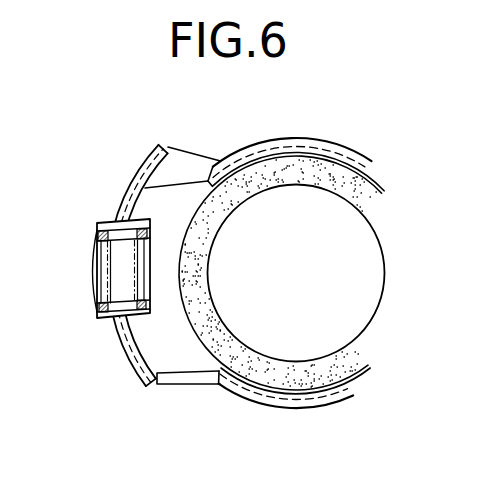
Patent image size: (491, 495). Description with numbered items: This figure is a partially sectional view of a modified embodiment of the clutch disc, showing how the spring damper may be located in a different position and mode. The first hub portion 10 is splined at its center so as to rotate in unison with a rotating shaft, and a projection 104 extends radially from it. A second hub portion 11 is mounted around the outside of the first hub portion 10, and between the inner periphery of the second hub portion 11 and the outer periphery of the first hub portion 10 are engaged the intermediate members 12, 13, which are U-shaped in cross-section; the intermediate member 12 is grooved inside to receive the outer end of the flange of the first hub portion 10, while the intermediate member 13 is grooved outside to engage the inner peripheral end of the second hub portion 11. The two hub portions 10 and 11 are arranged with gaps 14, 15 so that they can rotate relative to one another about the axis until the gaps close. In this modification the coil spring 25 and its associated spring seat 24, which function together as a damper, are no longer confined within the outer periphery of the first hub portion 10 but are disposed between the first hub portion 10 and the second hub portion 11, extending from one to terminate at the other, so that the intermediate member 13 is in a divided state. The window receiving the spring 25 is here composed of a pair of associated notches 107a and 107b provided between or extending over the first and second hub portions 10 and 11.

The first hub portion 10 is at (182, 247).
The second hub portion 11 is at (235, 137).
The intermediate member 12 is at (340, 153).
The intermediate member 13 is at (152, 160).
The gap 14 is at (183, 160).
The gap 15 is at (192, 377).
The spring seat 24 is at (115, 237).
The coil spring 25 is at (100, 288).
The projection 104 is at (157, 342).
The notch 107a is at (100, 248).
The notch 107b is at (147, 289).